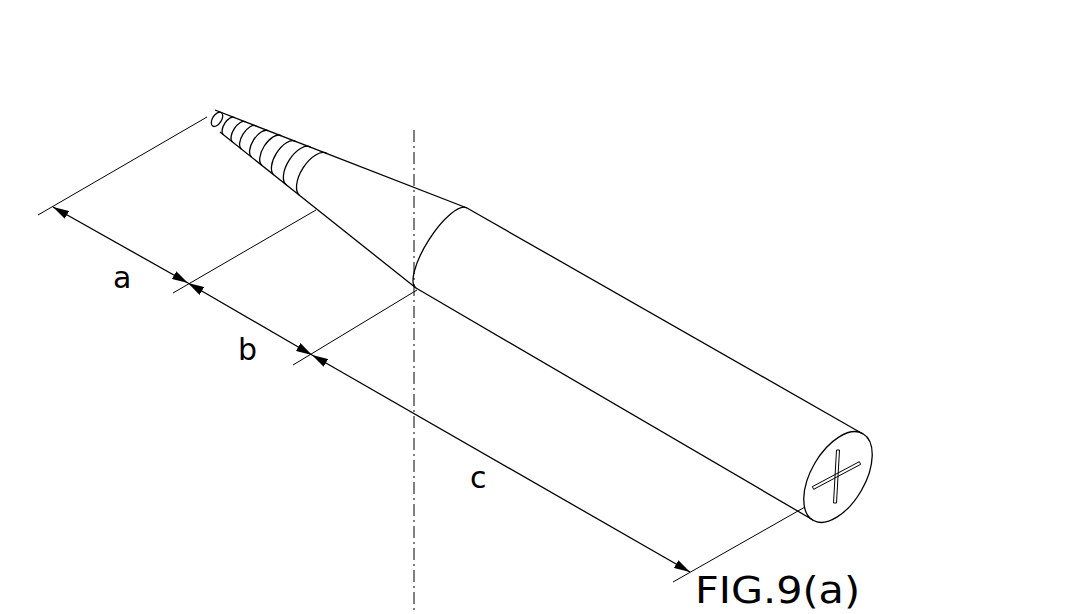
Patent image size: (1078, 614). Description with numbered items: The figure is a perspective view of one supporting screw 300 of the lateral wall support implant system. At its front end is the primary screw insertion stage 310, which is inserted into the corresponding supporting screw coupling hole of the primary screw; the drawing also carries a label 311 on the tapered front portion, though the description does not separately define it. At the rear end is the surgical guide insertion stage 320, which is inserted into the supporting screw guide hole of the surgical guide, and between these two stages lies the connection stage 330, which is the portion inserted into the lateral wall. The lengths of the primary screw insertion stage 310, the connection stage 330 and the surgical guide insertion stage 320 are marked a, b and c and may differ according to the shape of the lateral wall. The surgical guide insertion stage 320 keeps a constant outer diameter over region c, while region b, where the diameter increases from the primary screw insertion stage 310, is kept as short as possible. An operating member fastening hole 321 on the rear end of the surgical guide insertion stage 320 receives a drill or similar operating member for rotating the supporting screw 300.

The supporting screw 300 is at (752, 178).
The primary screw insertion stage 310 is at (280, 134).
The tapered portion 311 is at (313, 152).
The surgical guide insertion stage 320 is at (587, 293).
The operating member fastening hole 321 is at (862, 468).
The connection stage 330 is at (437, 202).